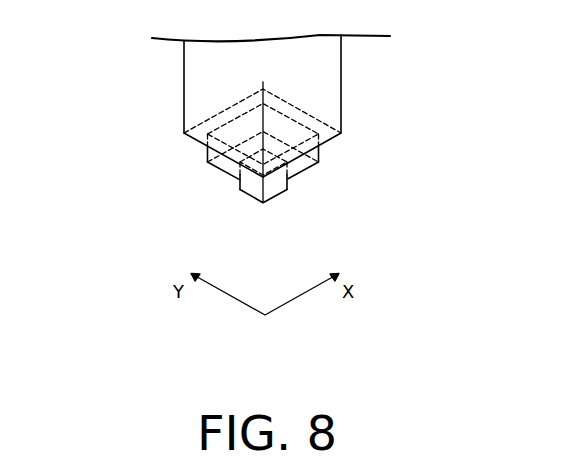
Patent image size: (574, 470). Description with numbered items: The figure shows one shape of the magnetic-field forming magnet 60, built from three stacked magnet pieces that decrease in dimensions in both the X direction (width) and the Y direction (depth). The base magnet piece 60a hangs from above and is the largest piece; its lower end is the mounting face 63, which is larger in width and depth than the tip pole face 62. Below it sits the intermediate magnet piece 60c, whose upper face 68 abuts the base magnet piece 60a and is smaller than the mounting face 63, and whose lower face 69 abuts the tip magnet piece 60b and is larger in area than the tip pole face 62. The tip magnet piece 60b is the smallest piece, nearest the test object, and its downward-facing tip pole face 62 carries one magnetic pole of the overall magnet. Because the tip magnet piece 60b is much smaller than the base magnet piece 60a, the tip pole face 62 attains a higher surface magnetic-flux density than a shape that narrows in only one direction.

The magnetic-field forming magnet 60 is at (257, 135).
The base magnet piece 60a is at (203, 83).
The tip magnet piece 60b is at (230, 192).
The intermediate magnet piece 60c is at (250, 164).
The tip pole face 62 is at (287, 194).
The mounting face 63 is at (330, 138).
The face of the intermediate magnet piece adjacent to the base magnet piece 68 is at (275, 122).
The face of the intermediate magnet piece adjacent to the tip magnet piece 69 is at (305, 168).